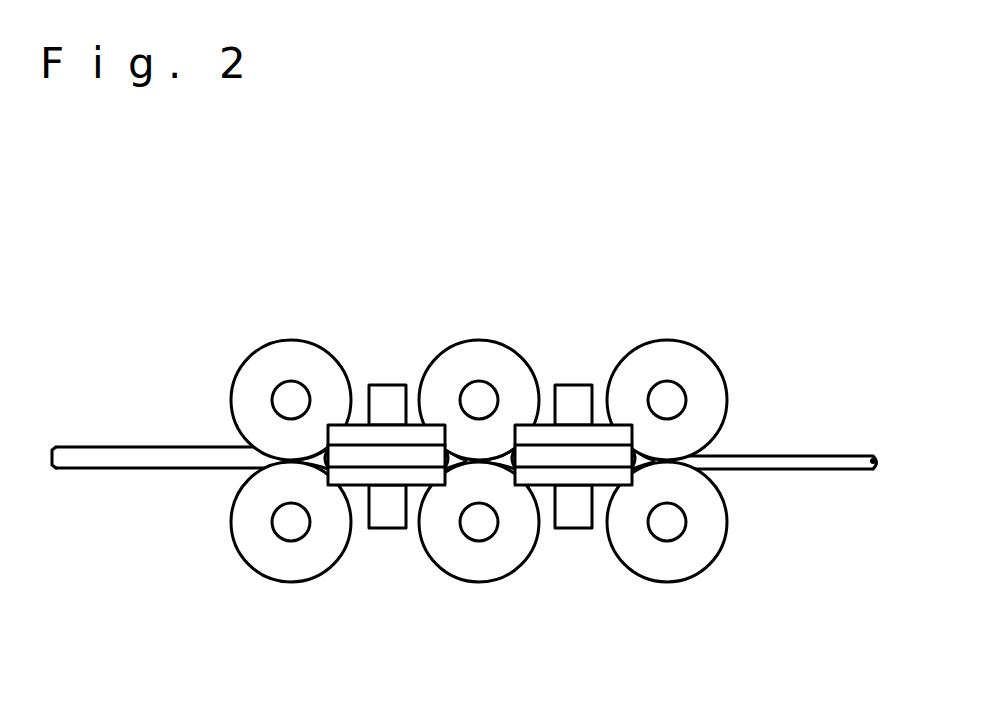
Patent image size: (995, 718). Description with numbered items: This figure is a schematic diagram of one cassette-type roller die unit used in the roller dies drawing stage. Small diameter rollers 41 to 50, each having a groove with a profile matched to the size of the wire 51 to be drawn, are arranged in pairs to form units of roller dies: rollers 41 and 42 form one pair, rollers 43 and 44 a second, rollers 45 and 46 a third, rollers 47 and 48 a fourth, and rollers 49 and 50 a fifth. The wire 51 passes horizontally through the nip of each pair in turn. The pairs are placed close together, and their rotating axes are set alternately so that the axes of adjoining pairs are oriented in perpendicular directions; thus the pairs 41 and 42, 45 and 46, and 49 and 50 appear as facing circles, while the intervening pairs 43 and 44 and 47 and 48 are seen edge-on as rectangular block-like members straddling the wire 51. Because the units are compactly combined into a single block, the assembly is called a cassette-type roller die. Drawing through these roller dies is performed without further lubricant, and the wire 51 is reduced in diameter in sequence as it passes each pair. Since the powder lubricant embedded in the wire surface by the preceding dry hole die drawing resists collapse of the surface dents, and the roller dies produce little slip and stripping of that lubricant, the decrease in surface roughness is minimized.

The small diameter roller 41 is at (283, 353).
The small diameter roller 42 is at (287, 572).
The small diameter roller 43 is at (391, 391).
The small diameter roller 44 is at (353, 436).
The small diameter roller 45 is at (502, 353).
The small diameter roller 46 is at (490, 572).
The small diameter roller 47 is at (606, 392).
The small diameter roller 48 is at (598, 437).
The small diameter roller 49 is at (697, 372).
The small diameter roller 50 is at (690, 570).
The wire 51 is at (95, 462).